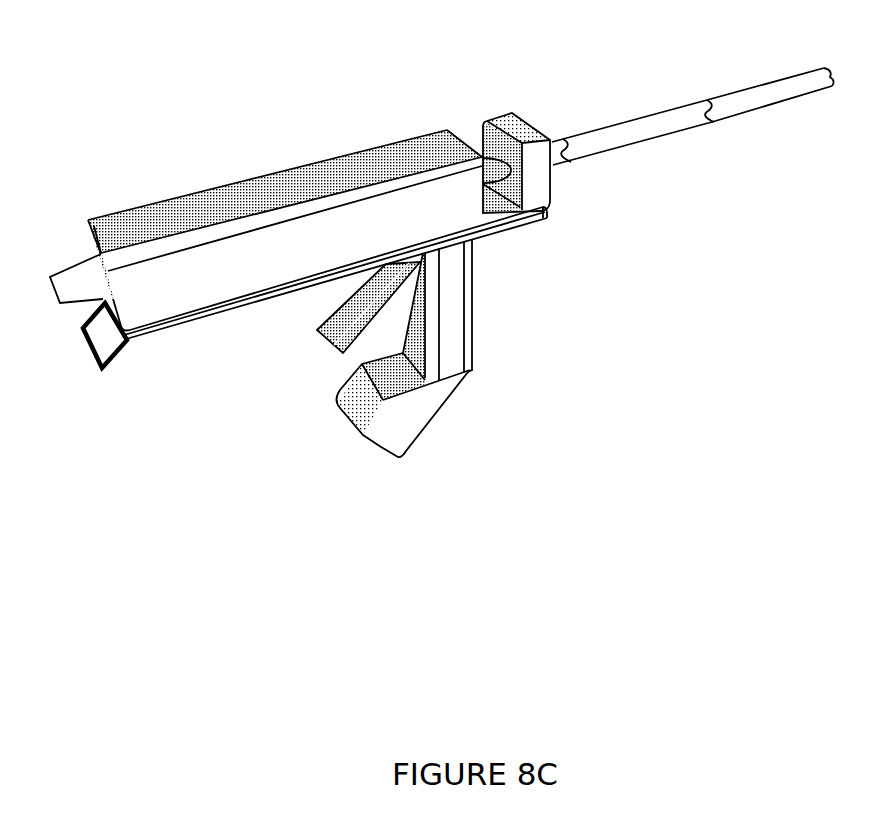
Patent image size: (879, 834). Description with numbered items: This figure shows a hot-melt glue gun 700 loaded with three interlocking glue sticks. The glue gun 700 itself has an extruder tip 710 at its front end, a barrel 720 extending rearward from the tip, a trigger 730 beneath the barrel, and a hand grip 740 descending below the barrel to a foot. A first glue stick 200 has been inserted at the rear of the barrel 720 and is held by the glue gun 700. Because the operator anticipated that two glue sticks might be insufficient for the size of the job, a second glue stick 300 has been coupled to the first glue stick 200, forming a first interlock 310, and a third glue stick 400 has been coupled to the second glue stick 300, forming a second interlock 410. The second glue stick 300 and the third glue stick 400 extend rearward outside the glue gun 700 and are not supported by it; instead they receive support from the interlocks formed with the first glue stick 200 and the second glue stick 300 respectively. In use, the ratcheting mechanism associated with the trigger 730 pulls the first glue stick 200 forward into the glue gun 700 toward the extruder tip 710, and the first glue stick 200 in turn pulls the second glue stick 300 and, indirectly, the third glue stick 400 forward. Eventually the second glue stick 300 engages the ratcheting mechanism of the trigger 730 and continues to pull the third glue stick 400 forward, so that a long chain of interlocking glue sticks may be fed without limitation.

The first interlocking glue stick 200 is at (557, 166).
The second glue stick 300 is at (624, 120).
The first interlock 310 is at (563, 137).
The third glue stick 400 is at (792, 100).
The second interlock 410 is at (708, 125).
The hot-melt glue gun 700 is at (709, 561).
The extruder tip 710 is at (80, 288).
The barrel 720 is at (252, 272).
The trigger 730 is at (340, 343).
The hand grip 740 is at (457, 307).